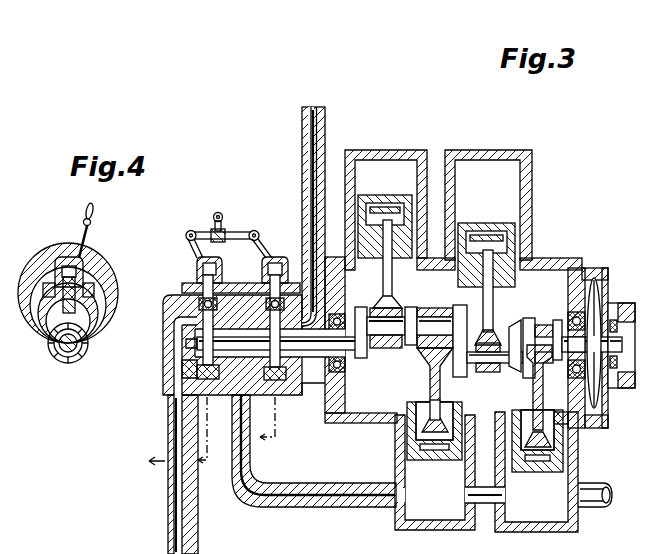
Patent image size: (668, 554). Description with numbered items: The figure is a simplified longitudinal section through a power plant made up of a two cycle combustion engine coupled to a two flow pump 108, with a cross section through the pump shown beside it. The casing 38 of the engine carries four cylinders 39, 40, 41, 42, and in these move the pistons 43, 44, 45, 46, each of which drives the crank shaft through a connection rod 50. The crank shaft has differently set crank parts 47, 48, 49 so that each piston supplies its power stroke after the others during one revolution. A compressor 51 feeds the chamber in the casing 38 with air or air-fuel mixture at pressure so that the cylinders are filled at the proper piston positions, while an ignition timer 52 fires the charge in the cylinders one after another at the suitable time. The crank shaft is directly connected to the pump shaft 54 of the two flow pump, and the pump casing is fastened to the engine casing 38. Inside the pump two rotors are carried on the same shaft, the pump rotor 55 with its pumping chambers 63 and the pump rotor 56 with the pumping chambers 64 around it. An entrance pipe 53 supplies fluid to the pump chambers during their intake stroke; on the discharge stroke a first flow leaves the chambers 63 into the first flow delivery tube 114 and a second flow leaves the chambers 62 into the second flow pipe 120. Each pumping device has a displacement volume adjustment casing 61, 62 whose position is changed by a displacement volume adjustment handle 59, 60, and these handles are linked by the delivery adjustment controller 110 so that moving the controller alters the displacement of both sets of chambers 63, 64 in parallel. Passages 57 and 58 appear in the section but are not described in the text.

In FIG. 3, the casing 38 is at (372, 422).
In FIG. 3, the cylinder 39 is at (371, 166).
In FIG. 3, the cylinder 40 is at (458, 180).
In FIG. 3, the cylinder 41 is at (414, 506).
In FIG. 3, the cylinder 42 is at (516, 511).
In FIG. 3, the piston 43 is at (404, 198).
In FIG. 3, the piston 44 is at (500, 226).
In FIG. 3, the piston 45 is at (421, 458).
In FIG. 3, the piston 46 is at (515, 468).
In FIG. 3, the crank part 47 is at (386, 336).
In FIG. 3, the crank part 48 is at (487, 365).
In FIG. 3, the crank part 49 is at (541, 330).
In FIG. 3, the connection rod 50 is at (392, 273).
In FIG. 3, the compressor 51 is at (597, 306).
In FIG. 3, the ignition timer 52 is at (613, 316).
In FIG. 3, the entrance pipe 53 is at (296, 496).
In FIG. 3, the pump shaft 54 is at (196, 345).
In FIG. 3, the pump rotor 55 is at (207, 327).
In FIG. 3, the pump rotor 56 is at (306, 397).
In FIG. 3, the fluid passage 57 is at (186, 321).
In FIG. 3, the shaft bearing 58 is at (331, 329).
In FIG. 3, the displacement volume adjustment handle 59 is at (199, 261).
In FIG. 3, the displacement volume adjustment handle 60 is at (277, 256).
In FIG. 4, the displacement volume adjustment handle 60 is at (62, 258).
In FIG. 3, the displacement volume adjustment casing 61 is at (185, 370).
In FIG. 3, the displacement volume adjustment casing 62 is at (278, 381).
In FIG. 4, the displacement volume adjustment casing 62 is at (65, 363).
In FIG. 3, the pumping chamber 63 is at (183, 306).
In FIG. 3, the pumping chamber 64 is at (276, 322).
In FIG. 4, the pumping chamber 64 is at (48, 363).
In FIG. 3, the two flow pump 108 is at (168, 296).
In FIG. 3, the delivery adjustment controller 110 is at (215, 214).
In FIG. 4, the delivery adjustment controller 110 is at (92, 219).
In FIG. 3, the first flow delivery tube 114 is at (185, 510).
In FIG. 3, the second flow pipe 120 is at (313, 163).